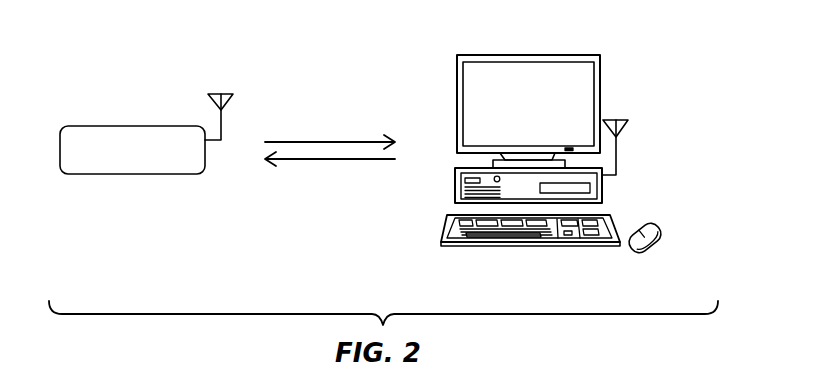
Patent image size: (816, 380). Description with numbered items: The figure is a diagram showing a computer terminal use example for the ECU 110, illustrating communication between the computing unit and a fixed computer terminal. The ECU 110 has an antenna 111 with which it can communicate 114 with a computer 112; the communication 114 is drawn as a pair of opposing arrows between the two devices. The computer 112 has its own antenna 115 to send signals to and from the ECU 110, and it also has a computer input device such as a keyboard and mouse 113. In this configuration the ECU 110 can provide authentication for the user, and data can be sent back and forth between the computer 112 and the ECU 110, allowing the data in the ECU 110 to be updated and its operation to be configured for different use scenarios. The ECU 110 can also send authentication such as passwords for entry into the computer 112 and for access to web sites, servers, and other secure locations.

The ECU 110 is at (100, 175).
The antenna 111 is at (211, 103).
The computer 112 is at (565, 173).
The keyboard and mouse 113 is at (555, 245).
The communication 114 is at (331, 141).
The antenna 115 is at (622, 142).